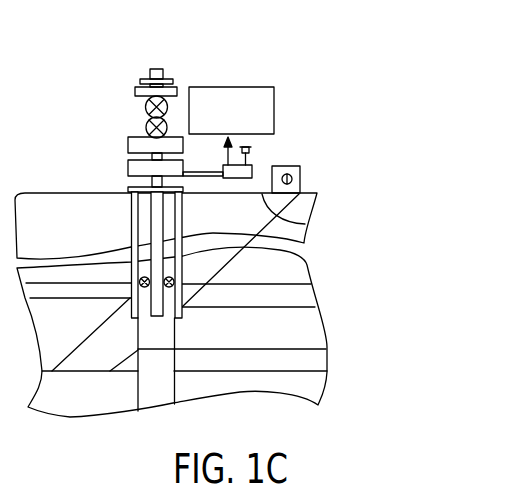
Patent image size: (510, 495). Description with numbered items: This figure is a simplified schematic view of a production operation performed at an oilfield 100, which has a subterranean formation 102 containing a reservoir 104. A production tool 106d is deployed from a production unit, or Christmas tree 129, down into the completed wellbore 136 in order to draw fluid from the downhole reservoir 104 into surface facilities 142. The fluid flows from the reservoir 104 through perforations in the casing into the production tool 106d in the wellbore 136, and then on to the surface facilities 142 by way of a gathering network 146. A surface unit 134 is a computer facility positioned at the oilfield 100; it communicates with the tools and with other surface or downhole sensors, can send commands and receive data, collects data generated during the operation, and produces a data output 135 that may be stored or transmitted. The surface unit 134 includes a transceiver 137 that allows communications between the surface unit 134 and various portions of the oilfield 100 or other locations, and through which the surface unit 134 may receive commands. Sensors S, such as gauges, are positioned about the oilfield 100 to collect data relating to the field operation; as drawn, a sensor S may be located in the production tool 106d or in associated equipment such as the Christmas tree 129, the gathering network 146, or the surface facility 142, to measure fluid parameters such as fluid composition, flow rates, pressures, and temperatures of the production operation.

The oilfield 100 is at (111, 142).
The subterranean formation 102 is at (222, 263).
The reservoir 104 is at (257, 334).
The production tool 106d is at (126, 303).
The Christmas tree 129 is at (164, 73).
The surface unit 134 is at (224, 164).
The data output 135 is at (274, 114).
The completed wellbore 136 is at (166, 221).
The transceiver 137 is at (251, 154).
The surface facilities 142 is at (300, 177).
The gathering network 146 is at (305, 224).
The sensor S is at (291, 174).